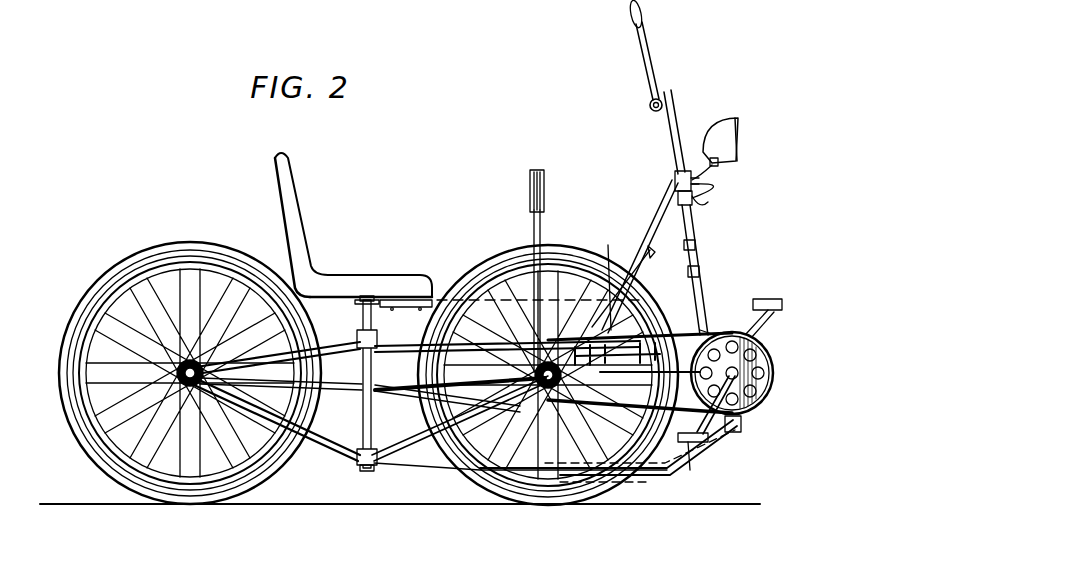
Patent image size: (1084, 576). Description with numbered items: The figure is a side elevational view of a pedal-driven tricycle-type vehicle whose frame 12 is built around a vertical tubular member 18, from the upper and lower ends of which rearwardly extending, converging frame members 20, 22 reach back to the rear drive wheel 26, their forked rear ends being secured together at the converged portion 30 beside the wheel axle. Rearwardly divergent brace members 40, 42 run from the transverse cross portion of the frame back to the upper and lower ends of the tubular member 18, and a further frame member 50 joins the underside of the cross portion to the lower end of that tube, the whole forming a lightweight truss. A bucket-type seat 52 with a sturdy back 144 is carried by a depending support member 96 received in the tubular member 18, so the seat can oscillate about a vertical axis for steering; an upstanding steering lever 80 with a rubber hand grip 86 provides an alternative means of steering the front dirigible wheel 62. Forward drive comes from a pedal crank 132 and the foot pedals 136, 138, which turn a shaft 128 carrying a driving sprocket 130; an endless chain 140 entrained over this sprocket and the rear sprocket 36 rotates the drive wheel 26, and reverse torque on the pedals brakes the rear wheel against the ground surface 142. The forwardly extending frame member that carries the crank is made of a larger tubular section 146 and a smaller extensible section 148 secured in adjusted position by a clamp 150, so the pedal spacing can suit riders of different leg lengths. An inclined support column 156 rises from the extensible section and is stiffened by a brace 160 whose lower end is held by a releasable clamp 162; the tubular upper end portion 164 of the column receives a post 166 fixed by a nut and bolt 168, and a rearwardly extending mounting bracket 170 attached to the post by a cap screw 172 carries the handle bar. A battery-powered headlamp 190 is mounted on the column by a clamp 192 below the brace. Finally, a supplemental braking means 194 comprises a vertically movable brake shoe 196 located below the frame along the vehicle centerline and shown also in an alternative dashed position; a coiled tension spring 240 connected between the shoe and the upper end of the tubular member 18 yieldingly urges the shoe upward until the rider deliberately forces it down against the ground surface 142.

The frame 12 is at (355, 460).
The vertical tubular member 18 is at (378, 455).
The frame member 20 is at (356, 345).
The frame member 22 is at (327, 438).
The drive wheel 26 is at (88, 298).
The converged portion of frame members 30 is at (203, 360).
The rear sprocket 36 is at (132, 452).
The brace member 40 is at (400, 348).
The brace member 42 is at (428, 440).
The frame member 50 is at (415, 436).
The seat 52 is at (334, 282).
The front dirigible wheel 62 is at (466, 490).
The steering lever 80 is at (542, 232).
The rubber hand grip 86 is at (545, 192).
The depending support member 96 is at (405, 298).
The axle or shaft 128 is at (766, 372).
The sprocket 130 is at (764, 346).
The pedal crank 132 is at (744, 426).
The foot pedal 136 is at (668, 472).
The foot pedal 138 is at (772, 298).
The endless chain 140 is at (703, 305).
The ground surface 142 is at (110, 505).
The back 144 is at (300, 170).
The tubular section 146 is at (522, 300).
The extensible section 148 is at (708, 336).
The clamp 150 is at (640, 322).
The support column 156 is at (697, 240).
The brace 160 is at (660, 202).
The releasable clamp 162 is at (608, 246).
The upper end portion 164 is at (698, 190).
The post 166 is at (677, 128).
The nut and bolt 168 is at (719, 165).
The mounting bracket 170 is at (660, 96).
The cap screw 172 is at (663, 100).
The headlamp 190 is at (732, 128).
The clamp 192 is at (698, 202).
The supplemental braking means 194 is at (722, 454).
The brake shoe 196 is at (566, 492).
The coiled tension spring 240 is at (512, 480).